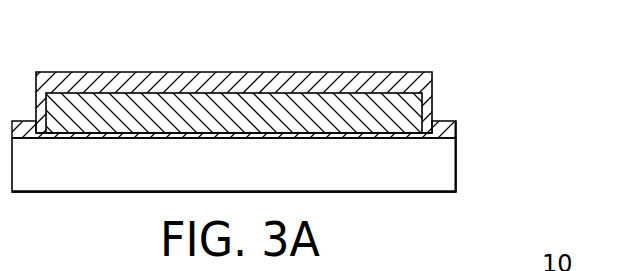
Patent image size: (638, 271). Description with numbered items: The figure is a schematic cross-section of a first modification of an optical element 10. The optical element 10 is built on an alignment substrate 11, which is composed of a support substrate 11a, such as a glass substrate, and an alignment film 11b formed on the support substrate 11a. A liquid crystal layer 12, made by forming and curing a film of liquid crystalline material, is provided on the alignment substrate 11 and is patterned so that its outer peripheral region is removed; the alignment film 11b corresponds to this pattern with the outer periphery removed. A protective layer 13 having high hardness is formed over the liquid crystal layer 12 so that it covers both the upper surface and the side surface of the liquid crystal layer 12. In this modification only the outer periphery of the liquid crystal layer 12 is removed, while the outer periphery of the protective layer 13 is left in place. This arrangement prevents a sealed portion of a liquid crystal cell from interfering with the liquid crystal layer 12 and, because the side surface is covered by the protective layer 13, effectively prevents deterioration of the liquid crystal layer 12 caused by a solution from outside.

The optical element 10 is at (298, 100).
The alignment substrate 11 is at (298, 130).
The support substrate 11a is at (445, 170).
The alignment film 11b is at (452, 135).
The liquid crystal layer 12 is at (428, 104).
The protective layer 13 is at (433, 77).